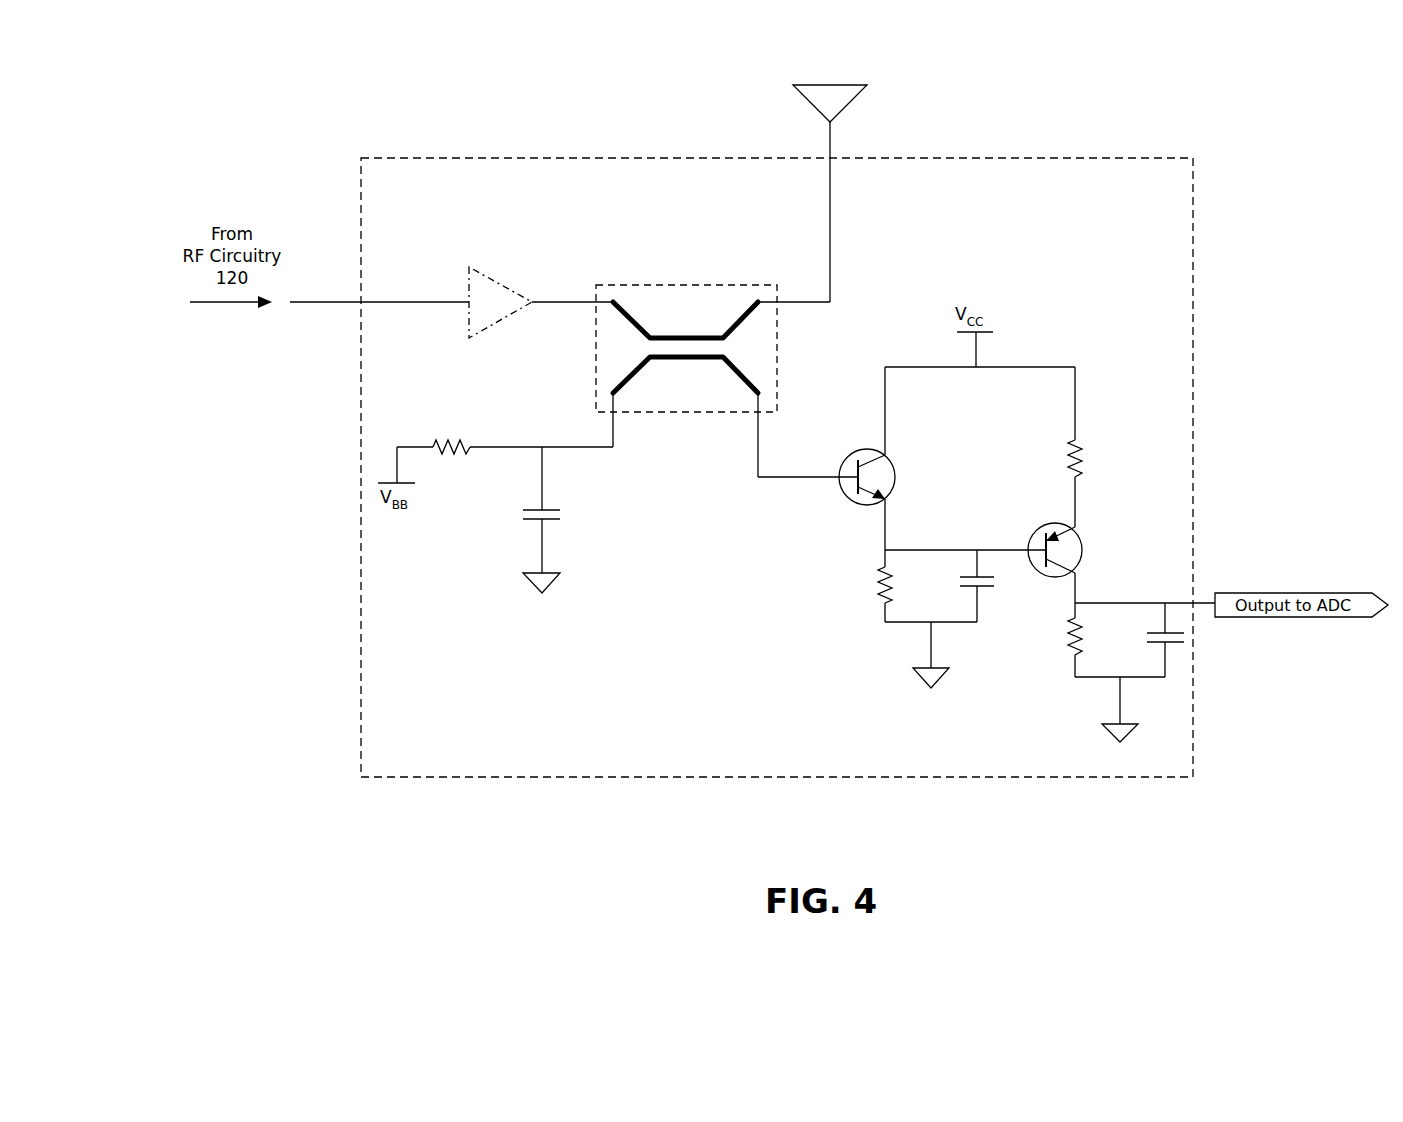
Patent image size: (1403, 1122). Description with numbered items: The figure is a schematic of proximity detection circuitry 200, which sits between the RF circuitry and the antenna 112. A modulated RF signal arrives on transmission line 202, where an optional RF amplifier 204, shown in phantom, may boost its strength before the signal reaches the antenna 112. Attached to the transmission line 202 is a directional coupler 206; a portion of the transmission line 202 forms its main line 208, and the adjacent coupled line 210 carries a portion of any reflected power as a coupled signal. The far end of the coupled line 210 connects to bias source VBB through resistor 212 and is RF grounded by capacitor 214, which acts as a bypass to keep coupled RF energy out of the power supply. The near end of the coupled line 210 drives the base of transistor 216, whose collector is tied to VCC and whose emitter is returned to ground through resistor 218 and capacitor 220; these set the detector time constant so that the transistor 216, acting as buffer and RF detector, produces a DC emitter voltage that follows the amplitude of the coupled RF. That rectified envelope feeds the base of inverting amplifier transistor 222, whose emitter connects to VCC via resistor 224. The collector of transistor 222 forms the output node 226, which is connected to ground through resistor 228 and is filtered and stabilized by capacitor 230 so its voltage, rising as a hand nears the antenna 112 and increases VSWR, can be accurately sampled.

The antenna 112 is at (875, 77).
The proximity detection circuitry 200 is at (1053, 239).
The transmission line 202 is at (574, 300).
The RF amplifier 204 is at (500, 302).
The directional coupler 206 is at (777, 350).
The main line 208 is at (742, 307).
The coupled line 210 is at (710, 360).
The resistor 212 is at (451, 436).
The capacitor 214 is at (561, 520).
The transistor 216 is at (886, 477).
The resistor 218 is at (866, 585).
The capacitor 220 is at (994, 585).
The inverting amplifier transistor 222 is at (1076, 550).
The resistor 224 is at (1093, 458).
The output node 226 is at (1084, 598).
The resistor 228 is at (1057, 636).
The capacitor 230 is at (1175, 647).